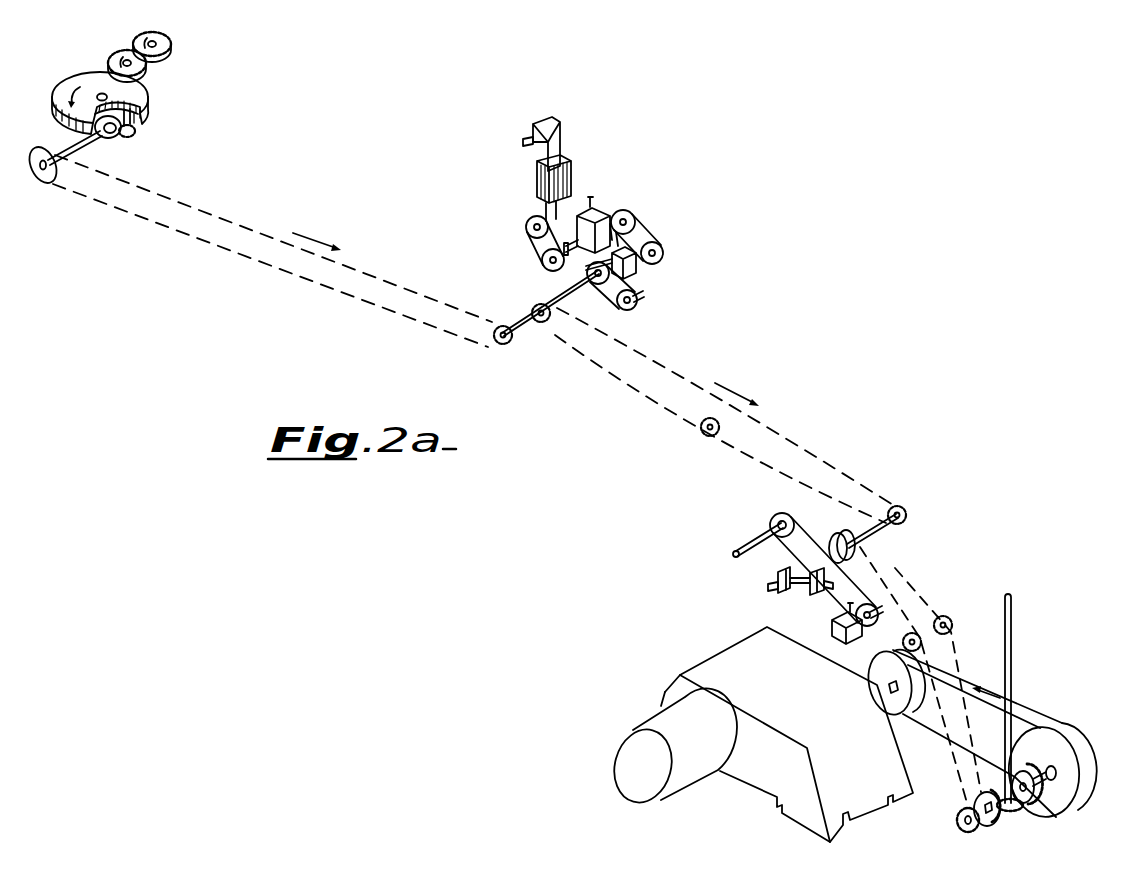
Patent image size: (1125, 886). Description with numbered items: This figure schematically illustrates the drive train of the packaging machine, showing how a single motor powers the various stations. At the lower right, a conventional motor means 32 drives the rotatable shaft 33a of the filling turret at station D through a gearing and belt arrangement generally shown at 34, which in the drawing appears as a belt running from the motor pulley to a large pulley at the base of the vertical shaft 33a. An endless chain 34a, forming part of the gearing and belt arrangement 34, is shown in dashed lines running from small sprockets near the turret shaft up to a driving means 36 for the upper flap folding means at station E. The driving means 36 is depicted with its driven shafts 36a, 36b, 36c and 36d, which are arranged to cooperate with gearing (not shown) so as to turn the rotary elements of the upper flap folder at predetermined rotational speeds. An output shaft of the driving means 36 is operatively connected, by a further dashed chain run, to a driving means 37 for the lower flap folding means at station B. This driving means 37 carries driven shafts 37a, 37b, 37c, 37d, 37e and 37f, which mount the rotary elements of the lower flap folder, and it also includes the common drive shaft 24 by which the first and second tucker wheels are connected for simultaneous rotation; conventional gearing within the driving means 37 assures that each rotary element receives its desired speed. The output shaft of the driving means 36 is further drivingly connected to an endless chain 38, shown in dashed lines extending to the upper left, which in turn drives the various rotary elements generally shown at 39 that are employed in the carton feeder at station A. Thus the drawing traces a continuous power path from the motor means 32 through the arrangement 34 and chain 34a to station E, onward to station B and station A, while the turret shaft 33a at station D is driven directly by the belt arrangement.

The station A is at (168, 70).
The rotary elements 39 is at (153, 113).
The endless chain 38 is at (319, 283).
The station B is at (668, 198).
The driven shaft 37a is at (533, 133).
The common drive shaft 24 is at (570, 177).
The driven shaft 37b is at (534, 227).
The driven shaft 37c is at (596, 204).
The driving means 37 is at (665, 231).
The driven shaft 37d is at (586, 272).
The driven shaft 37e is at (580, 298).
The driven shaft 37f is at (632, 309).
The station E is at (709, 547).
The driving means 36 is at (769, 516).
The driven shaft 36d is at (745, 561).
The driven shaft 36c is at (780, 593).
The driven shaft 36b is at (820, 597).
The driven shaft 36a is at (837, 634).
The motor means 32 is at (715, 648).
The endless chain 34a is at (905, 580).
The station D is at (1030, 582).
The gearing and belt arrangement 34 is at (1060, 710).
The rotatable shaft 33a is at (1013, 632).